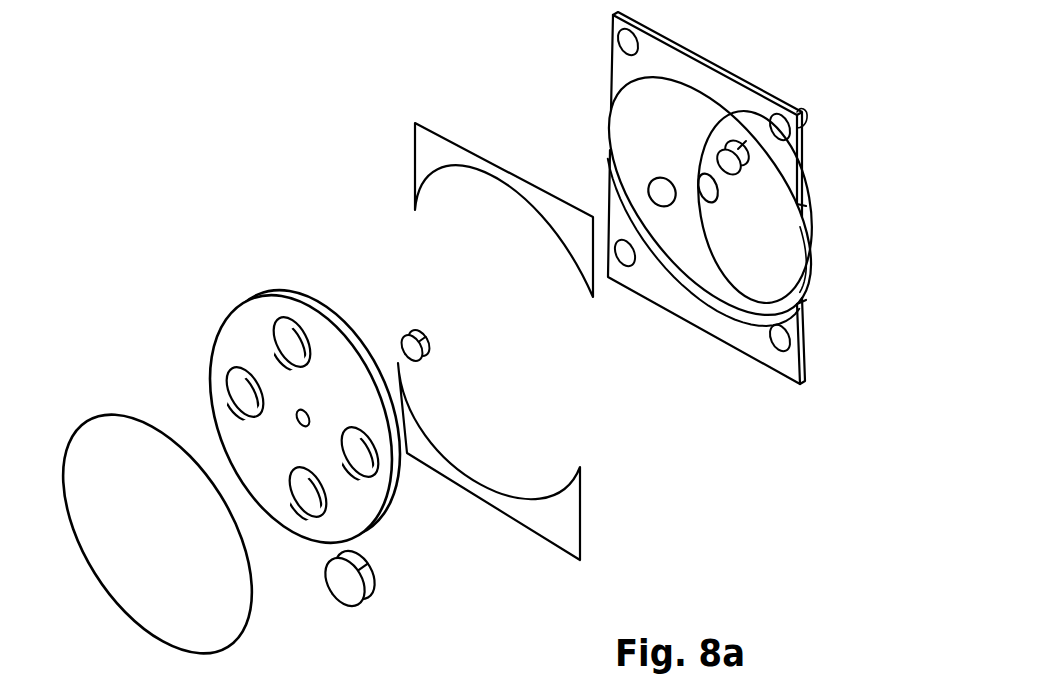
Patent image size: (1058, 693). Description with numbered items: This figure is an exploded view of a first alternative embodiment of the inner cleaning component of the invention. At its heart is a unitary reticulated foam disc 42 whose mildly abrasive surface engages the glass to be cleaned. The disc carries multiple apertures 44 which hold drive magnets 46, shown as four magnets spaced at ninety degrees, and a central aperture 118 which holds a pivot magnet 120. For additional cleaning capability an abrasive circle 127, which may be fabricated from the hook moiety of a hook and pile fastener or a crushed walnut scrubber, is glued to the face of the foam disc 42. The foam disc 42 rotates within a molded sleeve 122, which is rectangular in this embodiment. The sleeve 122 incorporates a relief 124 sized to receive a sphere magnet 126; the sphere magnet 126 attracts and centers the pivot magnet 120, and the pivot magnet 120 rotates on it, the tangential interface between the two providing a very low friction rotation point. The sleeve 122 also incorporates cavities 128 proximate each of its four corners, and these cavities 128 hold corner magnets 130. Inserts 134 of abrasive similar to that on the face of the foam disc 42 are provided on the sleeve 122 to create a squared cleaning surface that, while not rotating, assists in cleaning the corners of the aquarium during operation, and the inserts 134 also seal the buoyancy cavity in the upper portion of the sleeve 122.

The foam disc 42 is at (256, 296).
The apertures 44 is at (243, 388).
The drive magnets 46 is at (377, 568).
The central aperture 118 is at (306, 414).
The pivot magnet 120 is at (443, 338).
The molded sleeve 122 is at (815, 196).
The relief 124 is at (772, 111).
The sphere magnet 126 is at (670, 178).
The abrasive circle 127 is at (131, 413).
The cavities 128 is at (806, 123).
The corner magnets 130 is at (735, 173).
The inserts 134 is at (503, 171).